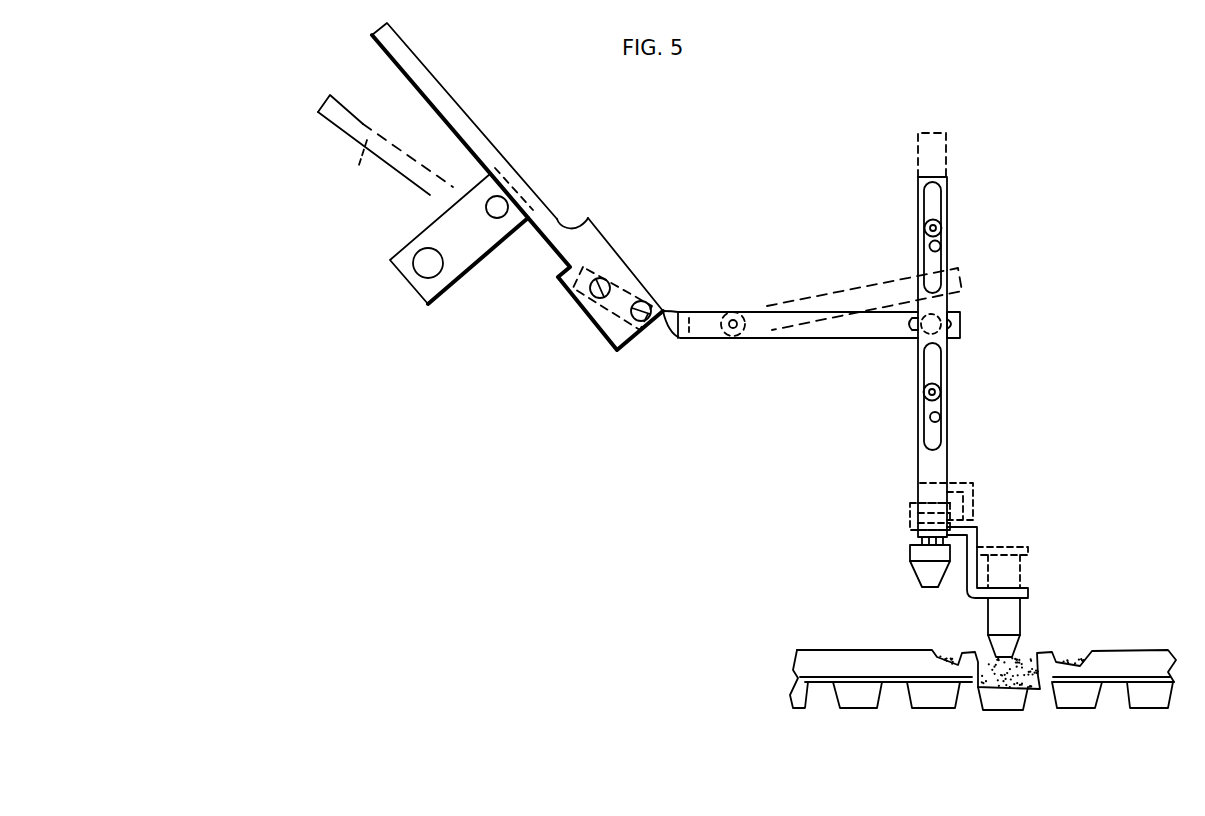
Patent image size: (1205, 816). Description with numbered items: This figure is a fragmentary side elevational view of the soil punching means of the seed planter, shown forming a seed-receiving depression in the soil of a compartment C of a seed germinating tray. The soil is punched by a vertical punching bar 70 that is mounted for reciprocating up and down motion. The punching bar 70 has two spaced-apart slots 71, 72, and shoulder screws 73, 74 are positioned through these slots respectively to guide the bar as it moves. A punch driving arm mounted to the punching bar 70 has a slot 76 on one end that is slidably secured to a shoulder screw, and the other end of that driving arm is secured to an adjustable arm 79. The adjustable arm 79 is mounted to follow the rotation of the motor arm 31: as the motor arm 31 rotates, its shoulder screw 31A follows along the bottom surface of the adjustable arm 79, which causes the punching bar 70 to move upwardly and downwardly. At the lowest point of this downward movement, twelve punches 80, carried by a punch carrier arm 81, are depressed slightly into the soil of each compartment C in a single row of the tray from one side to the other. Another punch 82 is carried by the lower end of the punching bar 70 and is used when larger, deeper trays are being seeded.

The adjustable arm 79 is at (456, 114).
The motor arm 31 is at (455, 220).
The shoulder screw 31A is at (497, 214).
The punching bar 70 is at (917, 157).
The slot 71 is at (929, 198).
The slot 72 is at (941, 420).
The shoulder screw 73 is at (945, 247).
The shoulder screw 74 is at (930, 377).
The slot 76 is at (960, 326).
The punch 80 is at (1013, 569).
The punch carrier arm 81 is at (973, 492).
The punch 82 is at (909, 505).
The seed-receiving compartment C is at (1060, 655).